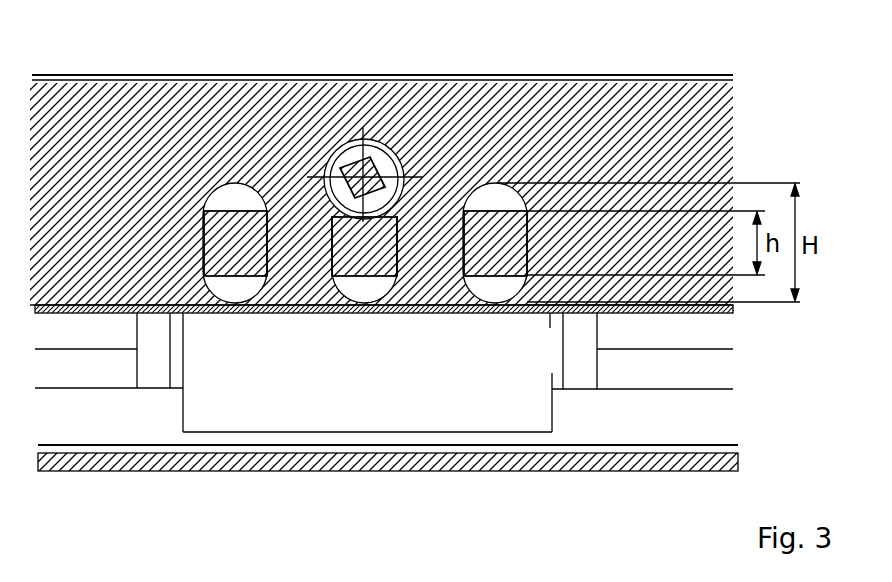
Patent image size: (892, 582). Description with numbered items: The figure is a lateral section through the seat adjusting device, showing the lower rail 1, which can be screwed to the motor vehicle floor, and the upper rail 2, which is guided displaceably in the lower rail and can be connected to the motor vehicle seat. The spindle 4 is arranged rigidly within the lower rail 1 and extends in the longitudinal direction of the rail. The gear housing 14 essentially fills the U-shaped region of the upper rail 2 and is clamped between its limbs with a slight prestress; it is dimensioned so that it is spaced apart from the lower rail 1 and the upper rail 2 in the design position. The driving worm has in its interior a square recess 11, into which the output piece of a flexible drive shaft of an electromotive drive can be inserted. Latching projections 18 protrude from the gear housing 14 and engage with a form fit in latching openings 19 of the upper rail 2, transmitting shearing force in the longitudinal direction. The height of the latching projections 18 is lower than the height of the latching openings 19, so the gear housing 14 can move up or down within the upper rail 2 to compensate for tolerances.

The lower rail 1 is at (385, 472).
The upper rail 2 is at (615, 115).
The spindle 4 is at (715, 332).
The square recess 11 is at (348, 170).
The gear housing 14 is at (347, 392).
The latching projection 18 is at (228, 235).
The latching opening 19 is at (490, 200).